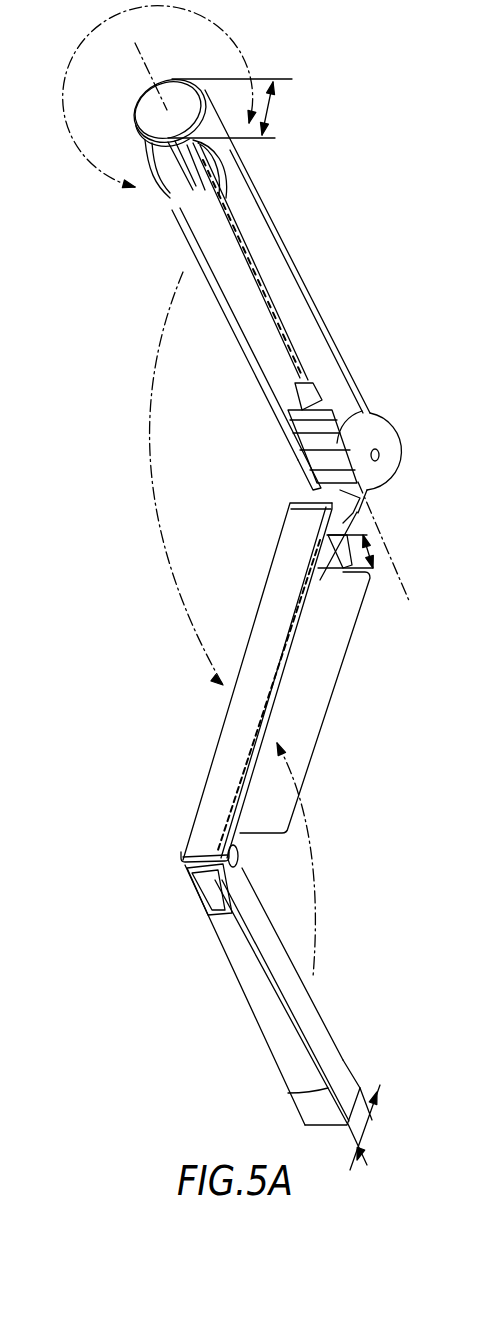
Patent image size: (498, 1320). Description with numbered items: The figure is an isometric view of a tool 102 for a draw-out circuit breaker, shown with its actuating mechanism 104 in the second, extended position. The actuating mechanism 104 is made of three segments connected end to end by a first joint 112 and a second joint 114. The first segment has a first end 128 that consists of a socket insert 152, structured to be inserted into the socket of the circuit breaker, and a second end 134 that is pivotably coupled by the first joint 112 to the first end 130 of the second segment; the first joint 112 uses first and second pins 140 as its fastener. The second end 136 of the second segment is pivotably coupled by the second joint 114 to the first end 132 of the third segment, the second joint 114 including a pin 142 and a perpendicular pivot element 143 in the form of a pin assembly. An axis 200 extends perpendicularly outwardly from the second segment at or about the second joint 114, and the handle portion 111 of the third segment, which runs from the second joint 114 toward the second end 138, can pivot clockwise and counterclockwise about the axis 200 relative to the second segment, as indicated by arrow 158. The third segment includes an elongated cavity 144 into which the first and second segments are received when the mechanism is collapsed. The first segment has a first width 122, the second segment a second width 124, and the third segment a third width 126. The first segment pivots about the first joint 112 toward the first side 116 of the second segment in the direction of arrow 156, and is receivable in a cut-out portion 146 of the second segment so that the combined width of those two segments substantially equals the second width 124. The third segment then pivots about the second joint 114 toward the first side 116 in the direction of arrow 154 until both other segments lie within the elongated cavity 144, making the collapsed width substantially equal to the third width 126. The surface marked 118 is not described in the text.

The tool 102 is at (254, 697).
The actuating mechanism 104 is at (218, 682).
The handle portion 111 is at (249, 277).
The first joint 112 is at (246, 998).
The second joint 114 is at (382, 403).
The first side of the second segment 116 is at (310, 585).
The top surface 118 is at (263, 630).
The first width 122 is at (370, 1128).
The second width 124 is at (373, 568).
The third width 126 is at (270, 100).
The first end of the first segment 128 is at (375, 1060).
The first end of the second segment 130 is at (165, 828).
The first end of the third segment 132 is at (286, 482).
The second end of the first segment 134 is at (165, 906).
The second end of the second segment 136 is at (380, 498).
The second end of the third segment 138 is at (110, 126).
The pins 140 is at (240, 853).
The pin 142 is at (378, 450).
The perpendicular pivot element 143 is at (300, 408).
The elongated cavity 144 is at (188, 195).
The cut-out portion 146 is at (333, 700).
The socket insert 152 is at (308, 1108).
The arrow 154 is at (155, 492).
The arrow 156 is at (313, 890).
The arrow 158 is at (80, 150).
The axis 200 is at (153, 72).